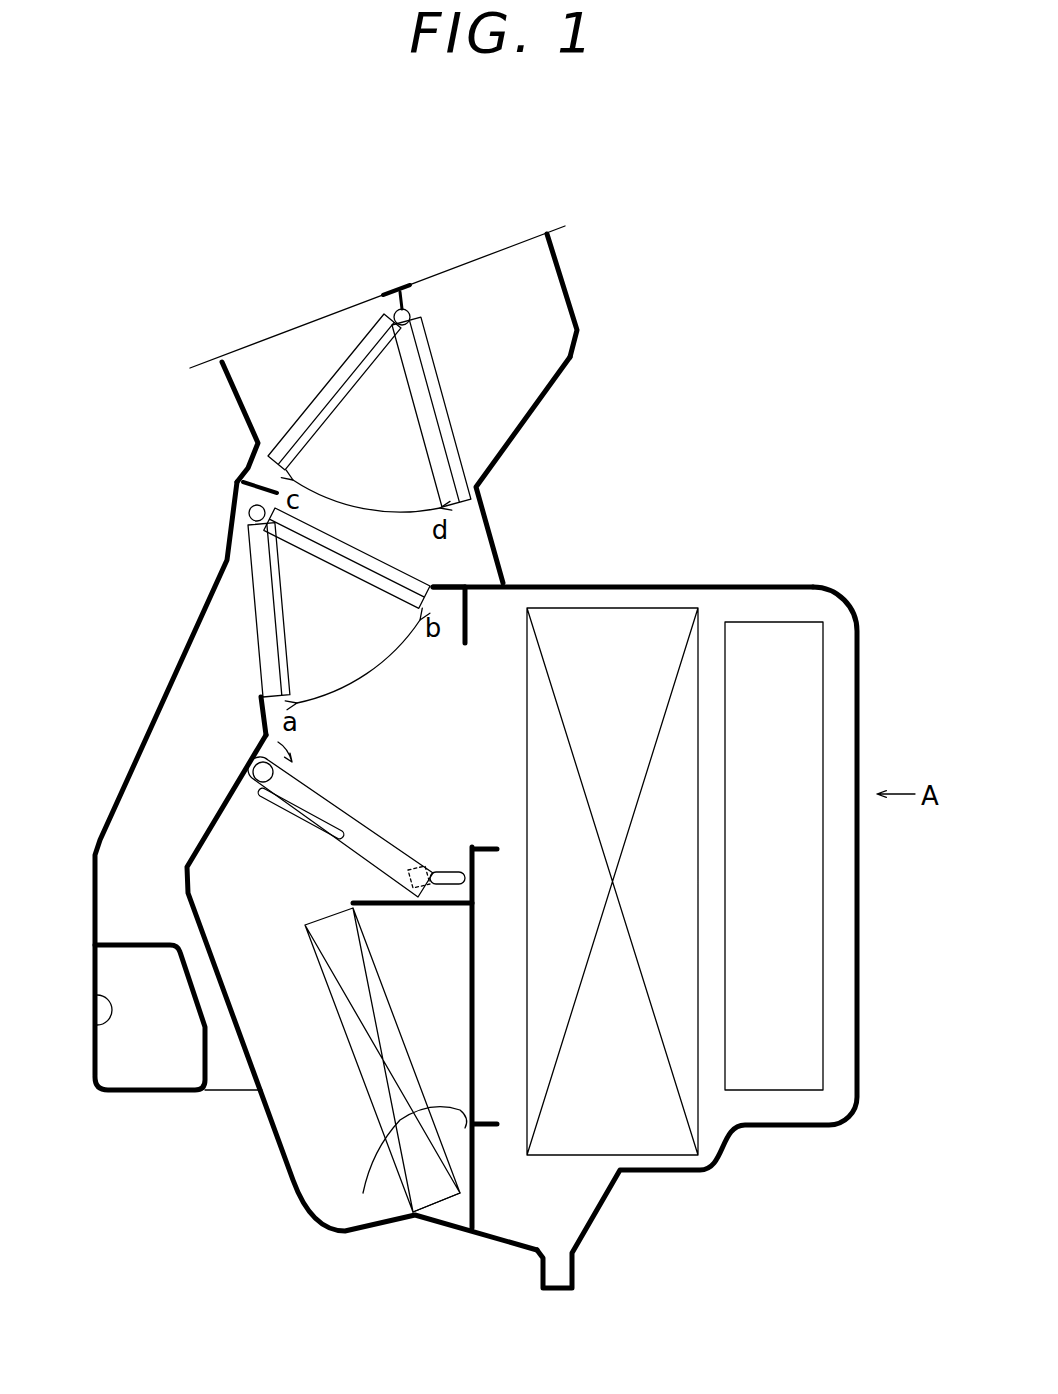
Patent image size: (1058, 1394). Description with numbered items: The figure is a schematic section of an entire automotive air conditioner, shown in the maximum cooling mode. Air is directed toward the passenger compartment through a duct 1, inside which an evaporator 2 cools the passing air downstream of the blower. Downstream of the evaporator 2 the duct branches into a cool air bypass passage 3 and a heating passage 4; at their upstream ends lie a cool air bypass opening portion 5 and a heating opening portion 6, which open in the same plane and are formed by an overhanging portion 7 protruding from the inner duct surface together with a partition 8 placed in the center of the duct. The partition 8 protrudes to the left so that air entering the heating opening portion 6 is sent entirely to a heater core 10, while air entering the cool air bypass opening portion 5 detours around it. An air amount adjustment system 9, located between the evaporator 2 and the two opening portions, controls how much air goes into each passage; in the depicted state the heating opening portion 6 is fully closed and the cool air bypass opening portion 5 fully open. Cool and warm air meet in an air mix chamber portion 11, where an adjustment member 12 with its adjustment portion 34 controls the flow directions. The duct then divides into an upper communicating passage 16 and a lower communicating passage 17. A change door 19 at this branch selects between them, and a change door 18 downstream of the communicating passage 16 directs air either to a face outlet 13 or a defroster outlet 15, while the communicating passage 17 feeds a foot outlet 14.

The duct 1 is at (707, 590).
The evaporator 2 is at (637, 605).
The cool air bypass passage 3 is at (473, 697).
The heating passage 4 is at (433, 1002).
The cool air bypass opening portion 5 is at (473, 643).
The heating opening portion 6 is at (363, 1193).
The overhanging portion 7 is at (470, 607).
The partition 8 is at (410, 887).
The air amount adjustment system 9 is at (508, 1031).
The heater core 10 is at (423, 1192).
The air mix chamber portion 11 is at (262, 737).
The adjustment member 12 is at (313, 748).
The face outlet 13 is at (230, 368).
The foot outlet 14 is at (92, 1030).
The defroster outlet 15 is at (543, 258).
The communicating passage 16 is at (545, 400).
The communicating passage 17 is at (193, 627).
The change door 18 is at (300, 418).
The change door 19 is at (253, 607).
The adjustment portion 34 is at (313, 827).